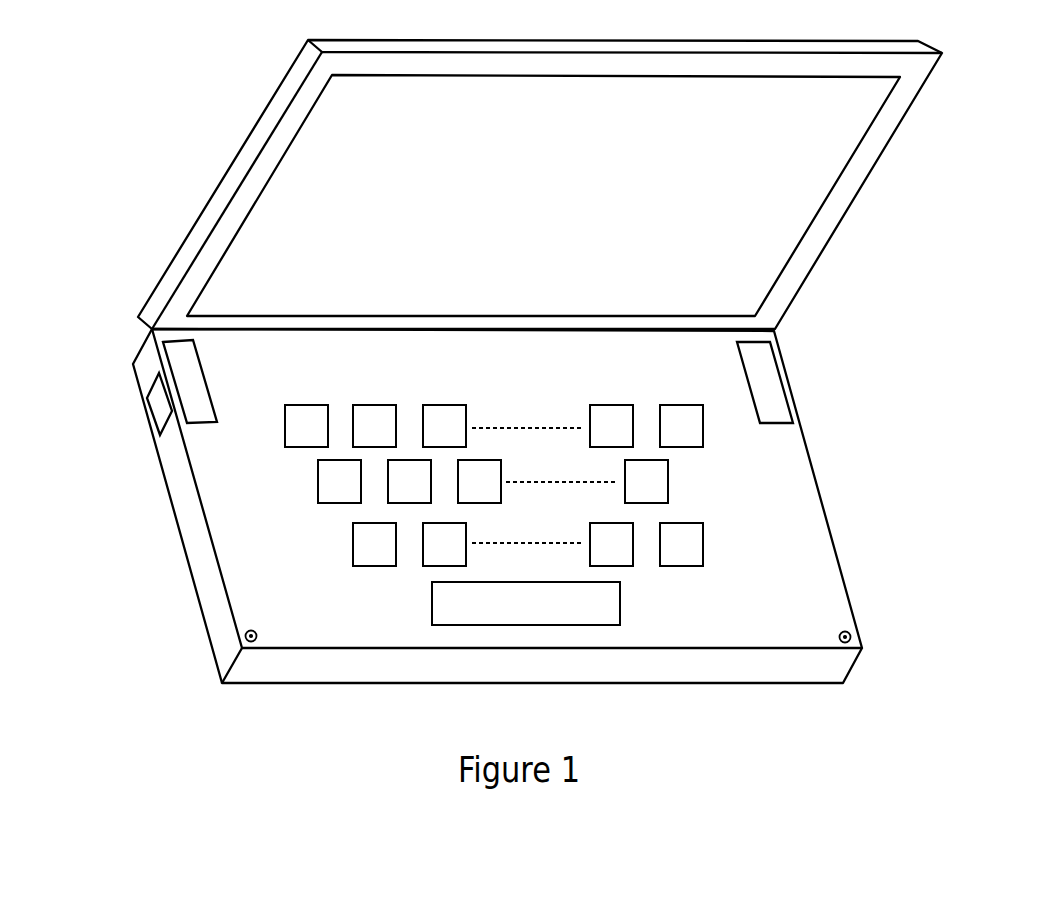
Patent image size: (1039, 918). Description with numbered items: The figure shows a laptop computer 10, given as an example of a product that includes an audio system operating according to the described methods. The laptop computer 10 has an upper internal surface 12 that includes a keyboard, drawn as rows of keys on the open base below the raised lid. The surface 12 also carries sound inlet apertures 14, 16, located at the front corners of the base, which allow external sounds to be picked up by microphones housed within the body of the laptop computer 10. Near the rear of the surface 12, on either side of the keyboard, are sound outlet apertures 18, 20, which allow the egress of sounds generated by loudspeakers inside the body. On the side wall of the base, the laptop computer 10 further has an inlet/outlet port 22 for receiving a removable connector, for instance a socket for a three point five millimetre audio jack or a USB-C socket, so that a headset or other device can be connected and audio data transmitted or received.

The laptop computer 10 is at (524, 361).
The upper internal surface 12 is at (777, 522).
The sound inlet aperture 14 is at (851, 632).
The sound inlet aperture 16 is at (245, 633).
The sound outlet aperture 18 is at (765, 388).
The sound outlet aperture 20 is at (182, 370).
The inlet/outlet port 22 is at (160, 408).